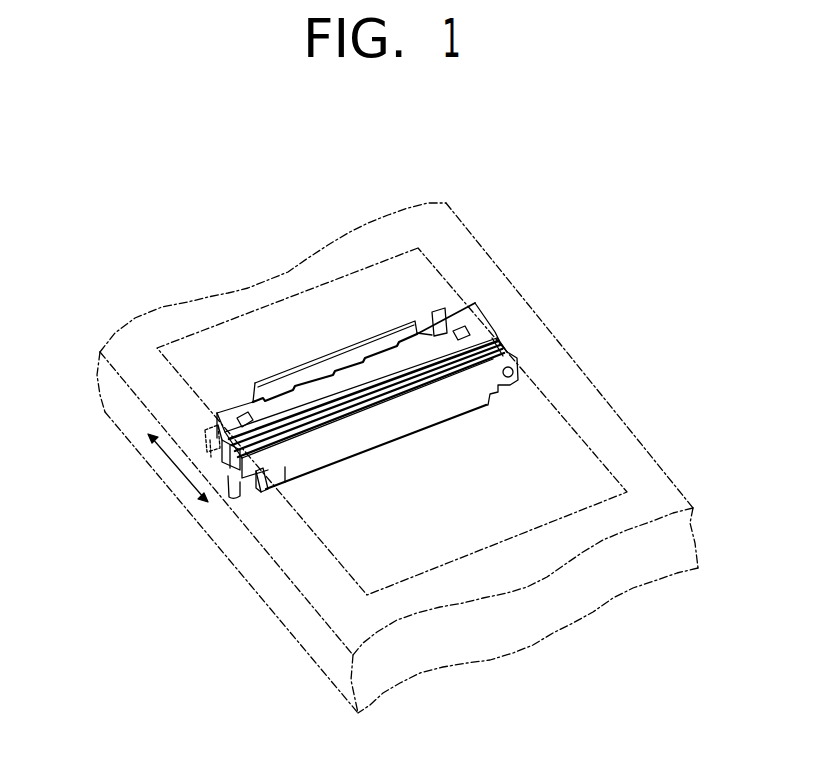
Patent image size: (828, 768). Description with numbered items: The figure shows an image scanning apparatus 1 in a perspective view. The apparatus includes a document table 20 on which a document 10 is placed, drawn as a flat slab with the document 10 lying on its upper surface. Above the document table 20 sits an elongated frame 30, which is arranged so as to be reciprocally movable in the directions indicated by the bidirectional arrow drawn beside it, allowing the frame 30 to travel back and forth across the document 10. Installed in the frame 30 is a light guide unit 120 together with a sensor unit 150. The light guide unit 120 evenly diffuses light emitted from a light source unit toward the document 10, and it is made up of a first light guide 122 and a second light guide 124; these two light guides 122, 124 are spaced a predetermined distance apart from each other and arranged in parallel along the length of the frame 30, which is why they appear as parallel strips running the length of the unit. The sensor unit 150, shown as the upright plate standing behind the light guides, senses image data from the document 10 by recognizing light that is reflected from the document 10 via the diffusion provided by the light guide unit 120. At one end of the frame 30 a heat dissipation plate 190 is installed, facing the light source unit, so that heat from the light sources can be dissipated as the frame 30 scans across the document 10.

The image scanning apparatus 1 is at (500, 202).
The document 10 is at (563, 430).
The document table 20 is at (641, 463).
The frame 30 is at (285, 467).
The light guide unit 120 is at (608, 273).
The first light guide 122 is at (490, 354).
The second light guide 124 is at (505, 363).
The sensor unit 150 is at (334, 349).
The heat dissipation plate 190 is at (230, 477).